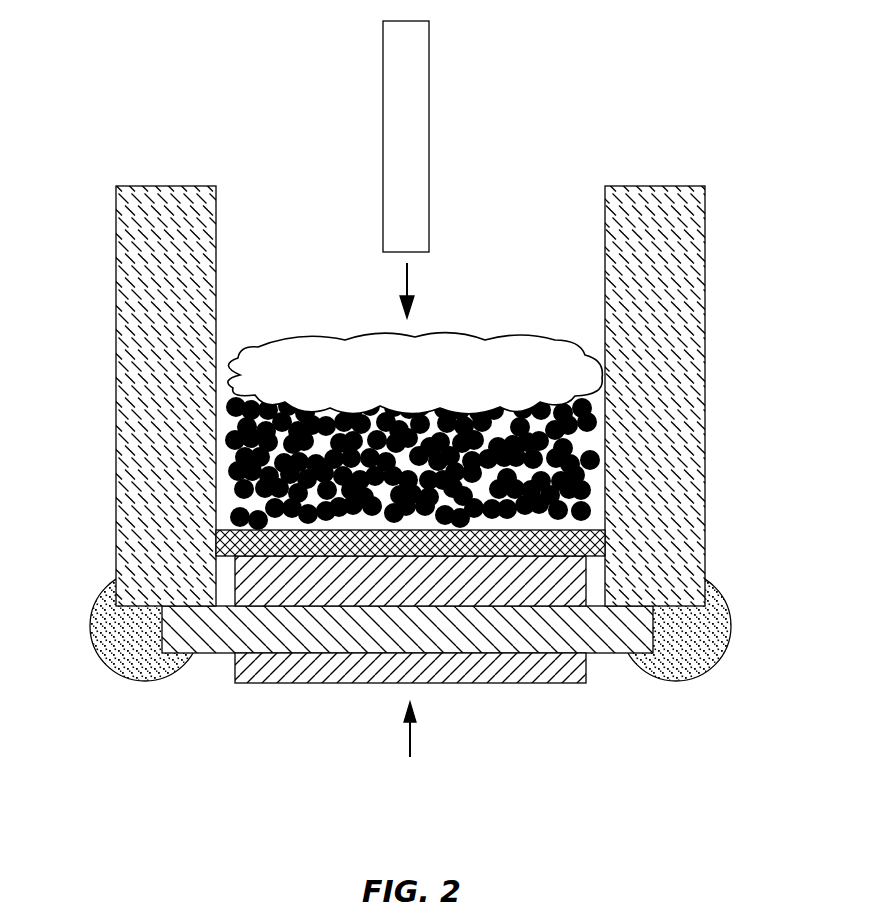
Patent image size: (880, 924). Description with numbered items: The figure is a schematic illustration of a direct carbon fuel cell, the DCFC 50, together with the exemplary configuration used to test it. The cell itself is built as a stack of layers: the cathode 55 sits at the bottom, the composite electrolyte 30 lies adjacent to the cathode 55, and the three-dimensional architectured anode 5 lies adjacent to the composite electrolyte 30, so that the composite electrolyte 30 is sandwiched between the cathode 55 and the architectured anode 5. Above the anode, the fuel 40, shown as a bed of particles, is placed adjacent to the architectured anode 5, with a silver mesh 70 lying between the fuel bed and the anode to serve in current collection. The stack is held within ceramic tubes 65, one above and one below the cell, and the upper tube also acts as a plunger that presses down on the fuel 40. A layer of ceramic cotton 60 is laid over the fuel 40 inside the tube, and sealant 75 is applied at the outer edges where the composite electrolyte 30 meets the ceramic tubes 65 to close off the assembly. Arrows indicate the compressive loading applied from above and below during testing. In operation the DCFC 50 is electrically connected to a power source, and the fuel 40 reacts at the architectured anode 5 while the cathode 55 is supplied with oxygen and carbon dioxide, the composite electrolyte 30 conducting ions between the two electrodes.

The 3D architectured anode 5 is at (560, 582).
The composite electrolyte 30 is at (632, 637).
The fuel 40 is at (266, 420).
The DCFC 50 is at (268, 756).
The cathode 55 is at (542, 683).
The ceramic cotton 60 is at (514, 350).
The ceramic tubes 65 is at (415, 80).
The silver mesh 70 is at (585, 545).
The sealant 75 is at (120, 633).